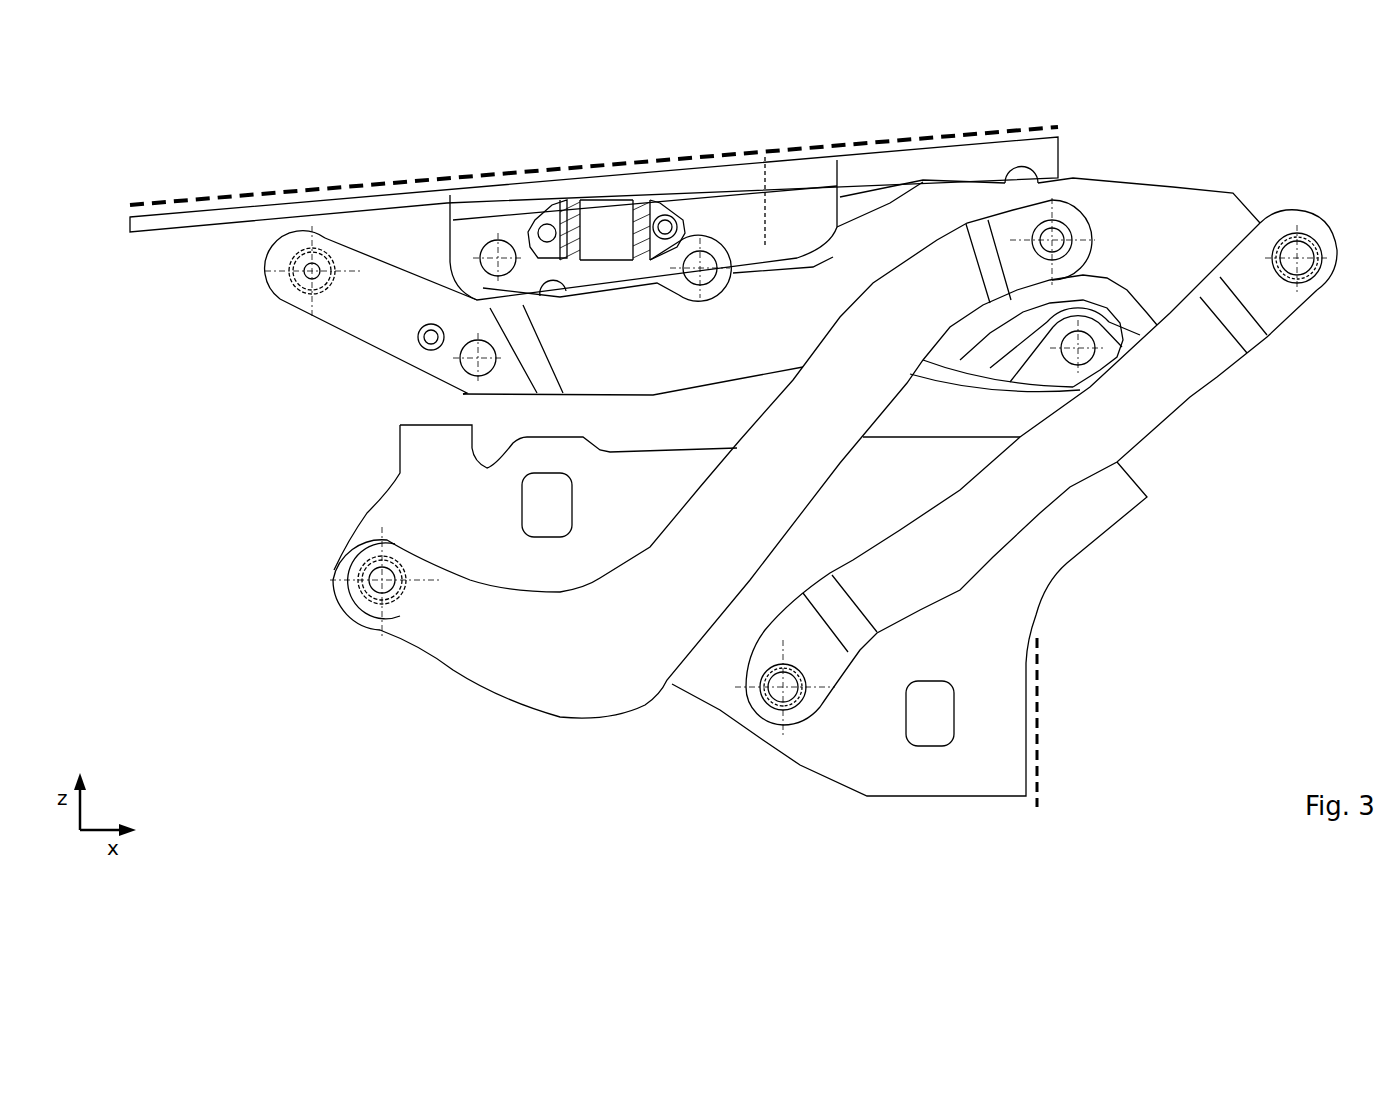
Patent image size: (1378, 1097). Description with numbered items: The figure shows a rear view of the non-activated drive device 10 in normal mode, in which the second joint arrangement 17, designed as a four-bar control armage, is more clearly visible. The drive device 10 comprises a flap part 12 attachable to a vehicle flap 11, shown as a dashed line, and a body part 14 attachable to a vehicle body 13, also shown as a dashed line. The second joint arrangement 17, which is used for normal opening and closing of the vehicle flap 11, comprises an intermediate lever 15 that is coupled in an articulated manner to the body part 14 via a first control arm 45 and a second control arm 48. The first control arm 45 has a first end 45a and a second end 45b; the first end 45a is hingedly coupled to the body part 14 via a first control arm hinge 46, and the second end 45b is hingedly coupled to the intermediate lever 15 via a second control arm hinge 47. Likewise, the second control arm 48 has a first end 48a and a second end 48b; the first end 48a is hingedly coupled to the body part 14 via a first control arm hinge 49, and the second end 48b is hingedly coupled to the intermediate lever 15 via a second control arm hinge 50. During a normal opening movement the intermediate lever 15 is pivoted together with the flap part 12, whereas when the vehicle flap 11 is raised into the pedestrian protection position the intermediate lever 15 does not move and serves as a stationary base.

The drive device 10 is at (232, 127).
The vehicle flap 11 is at (1010, 126).
The flap part 12 is at (140, 223).
The vehicle body 13 is at (1037, 697).
The body part 14 is at (985, 655).
The intermediate lever 15 is at (779, 338).
The second joint arrangement 17 is at (652, 730).
The first control arm 45 is at (766, 406).
The first end of the first control arm 45a is at (430, 628).
The second end of the first control arm 45b is at (1080, 232).
The first control arm hinge 46 is at (383, 578).
The second control arm hinge 47 is at (1052, 238).
The second control arm 48 is at (1033, 496).
The first end of the second control arm 48a is at (775, 722).
The second end of the second control arm 48b is at (1298, 224).
The first control arm hinge 49 is at (783, 687).
The second control arm hinge 50 is at (1297, 260).